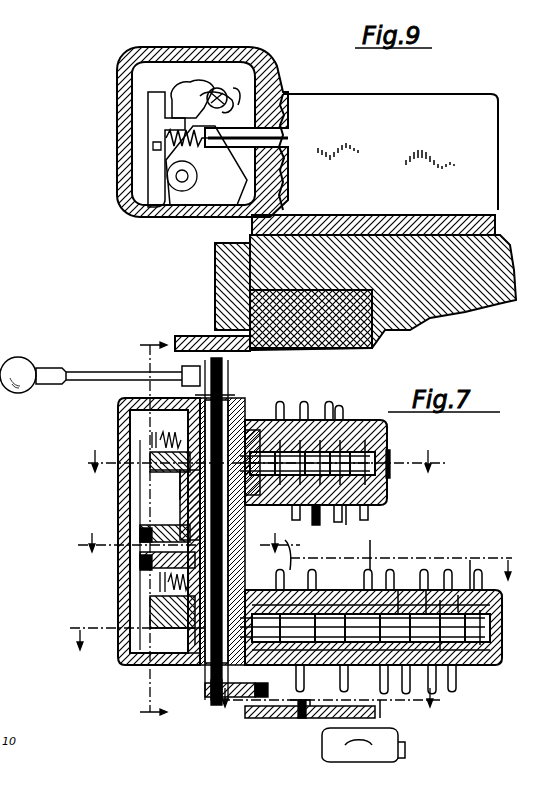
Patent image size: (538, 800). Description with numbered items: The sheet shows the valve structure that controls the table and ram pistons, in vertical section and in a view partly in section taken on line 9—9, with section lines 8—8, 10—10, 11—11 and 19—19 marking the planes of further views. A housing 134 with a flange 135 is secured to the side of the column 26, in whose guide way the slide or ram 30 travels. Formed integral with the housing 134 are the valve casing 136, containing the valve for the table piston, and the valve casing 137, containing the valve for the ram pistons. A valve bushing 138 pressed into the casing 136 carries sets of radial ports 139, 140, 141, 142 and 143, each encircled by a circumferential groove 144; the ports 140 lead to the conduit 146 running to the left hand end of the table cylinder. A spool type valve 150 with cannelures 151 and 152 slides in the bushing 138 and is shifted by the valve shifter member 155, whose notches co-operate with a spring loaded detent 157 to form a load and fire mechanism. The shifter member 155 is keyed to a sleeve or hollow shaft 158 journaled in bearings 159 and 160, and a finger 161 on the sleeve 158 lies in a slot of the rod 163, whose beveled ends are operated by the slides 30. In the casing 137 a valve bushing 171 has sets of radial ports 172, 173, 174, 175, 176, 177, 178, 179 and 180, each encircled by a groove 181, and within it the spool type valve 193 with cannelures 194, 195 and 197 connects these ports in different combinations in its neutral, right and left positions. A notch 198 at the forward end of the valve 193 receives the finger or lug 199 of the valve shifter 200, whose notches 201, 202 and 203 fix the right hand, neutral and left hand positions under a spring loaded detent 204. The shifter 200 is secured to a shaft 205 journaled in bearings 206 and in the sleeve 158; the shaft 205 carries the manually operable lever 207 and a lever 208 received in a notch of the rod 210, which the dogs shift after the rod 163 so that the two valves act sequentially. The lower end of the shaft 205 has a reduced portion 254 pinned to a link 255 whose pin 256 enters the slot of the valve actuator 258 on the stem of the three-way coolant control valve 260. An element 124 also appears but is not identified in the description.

In FIG. 9, the housing 134 is at (372, 97).
In FIG. 9, the flange 135 is at (252, 232).
In FIG. 9, the column 26 is at (260, 268).
In FIG. 9, the slide or ram 30 is at (198, 336).
In FIG. 9, the notch 198 is at (222, 145).
In FIG. 9, the finger or lug 199 is at (216, 148).
In FIG. 9, the valve shifter 200 is at (236, 86).
In FIG. 7, the valve shifter 200 is at (150, 636).
In FIG. 9, the notch 201 is at (200, 84).
In FIG. 9, the notch 202 is at (206, 96).
In FIG. 9, the notch 203 is at (188, 130).
In FIG. 9, the spring loaded detent 204 is at (147, 114).
In FIG. 7, the spring loaded detent 204 is at (140, 612).
In FIG. 9, the shaft 205 is at (228, 95).
In FIG. 7, the shaft 205 is at (150, 600).
In FIG. 7, the bearings 206 is at (125, 672).
In FIG. 7, the manually operable lever 207 is at (122, 376).
In FIG. 7, the lever 208 is at (140, 562).
In FIG. 7, the rod 210 is at (150, 584).
In FIG. 7, the section line 8— 8 is at (147, 528).
In FIG. 7, the section line 9— 9 is at (296, 611).
In FIG. 7, the section line 10— 10 is at (263, 469).
In FIG. 7, the section line 11— 11 is at (187, 540).
In FIG. 7, the section line 19— 19 is at (308, 706).
In FIG. 7, the slide 124 is at (140, 572).
In FIG. 7, the valve casing 136 is at (387, 430).
In FIG. 7, the valve casing 137 is at (492, 665).
In FIG. 7, the valve bushing 138 is at (387, 446).
In FIG. 7, the radial ports 139 is at (284, 420).
In FIG. 7, the radial ports 140 is at (300, 420).
In FIG. 7, the radial ports 141 is at (316, 420).
In FIG. 7, the radial ports 142 is at (330, 420).
In FIG. 7, the radial ports 143 is at (345, 420).
In FIG. 7, the circumferential groove 144 is at (340, 517).
In FIG. 7, the conduit 146 is at (386, 505).
In FIG. 7, the spool type valve 150 is at (387, 458).
In FIG. 7, the cannelure 151 is at (348, 528).
In FIG. 7, the cannelure 152 is at (316, 525).
In FIG. 7, the valve shifter member 155 is at (130, 493).
In FIG. 7, the spring loaded detent 157 is at (122, 452).
In FIG. 7, the sleeve or hollow shaft 158 is at (238, 398).
In FIG. 7, the bearing 159 is at (242, 398).
In FIG. 7, the bearing 160 is at (186, 496).
In FIG. 7, the finger 161 is at (186, 504).
In FIG. 7, the rod 163 is at (140, 536).
In FIG. 7, the valve bushing 171 is at (502, 620).
In FIG. 7, the radial ports 172 is at (298, 575).
In FIG. 7, the radial ports 173 is at (308, 685).
In FIG. 7, the radial ports 174 is at (318, 583).
In FIG. 7, the radial ports 175 is at (360, 678).
In FIG. 7, the radial ports 176 is at (380, 680).
In FIG. 7, the radial ports 177 is at (402, 665).
In FIG. 7, the radial ports 178 is at (418, 578).
In FIG. 7, the radial ports 179 is at (432, 590).
In FIG. 7, the radial ports 180 is at (466, 592).
In FIG. 7, the circumferential groove 181 is at (472, 560).
In FIG. 7, the spool type valve 193 is at (502, 633).
In FIG. 7, the cannelure 194 is at (290, 720).
In FIG. 7, the cannelure 195 is at (368, 575).
In FIG. 7, the cannelure 197 is at (436, 600).
In FIG. 7, the reduced portion 254 is at (214, 700).
In FIG. 7, the link 255 is at (222, 703).
In FIG. 7, the pin 256 is at (268, 700).
In FIG. 7, the valve actuator 258 is at (304, 720).
In FIG. 7, the coolant control valve 260 is at (398, 738).